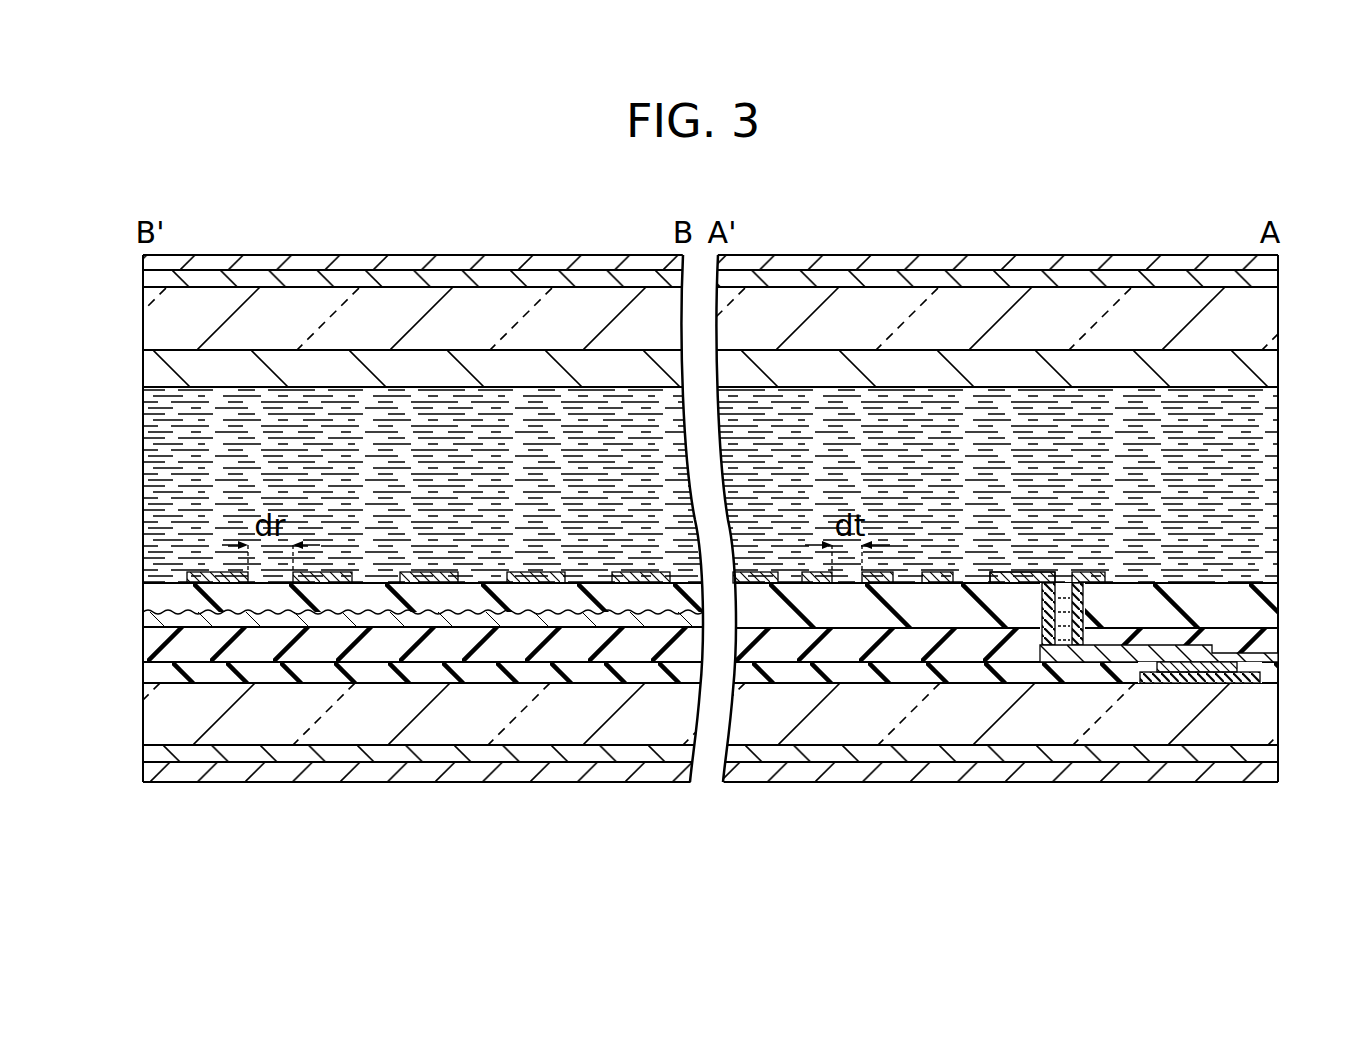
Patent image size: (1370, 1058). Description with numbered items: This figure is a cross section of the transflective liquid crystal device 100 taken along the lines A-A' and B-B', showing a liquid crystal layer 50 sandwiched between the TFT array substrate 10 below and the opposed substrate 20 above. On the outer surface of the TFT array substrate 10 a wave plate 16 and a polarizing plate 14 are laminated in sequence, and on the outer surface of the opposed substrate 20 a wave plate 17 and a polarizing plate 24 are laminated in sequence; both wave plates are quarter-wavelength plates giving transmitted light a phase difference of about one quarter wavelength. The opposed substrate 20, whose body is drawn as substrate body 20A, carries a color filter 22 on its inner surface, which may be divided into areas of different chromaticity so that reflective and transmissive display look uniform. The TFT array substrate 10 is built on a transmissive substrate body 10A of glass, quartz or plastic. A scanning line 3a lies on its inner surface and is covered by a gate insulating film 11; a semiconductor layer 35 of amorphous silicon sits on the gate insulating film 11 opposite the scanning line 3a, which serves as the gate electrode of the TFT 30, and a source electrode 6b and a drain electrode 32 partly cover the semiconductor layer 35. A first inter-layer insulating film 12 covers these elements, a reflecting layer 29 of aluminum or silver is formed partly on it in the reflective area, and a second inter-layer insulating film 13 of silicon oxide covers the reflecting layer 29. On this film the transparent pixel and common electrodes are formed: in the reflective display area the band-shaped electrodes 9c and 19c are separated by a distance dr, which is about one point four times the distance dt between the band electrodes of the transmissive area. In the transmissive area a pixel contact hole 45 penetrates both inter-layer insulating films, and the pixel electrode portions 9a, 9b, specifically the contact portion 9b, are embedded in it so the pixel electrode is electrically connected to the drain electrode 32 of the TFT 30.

The liquid crystal device 100 is at (1224, 172).
The opposed substrate 20 is at (1300, 386).
The polarizing plate 24 is at (143, 262).
The wave plate 17 is at (148, 278).
The substrate body 20A is at (153, 325).
The color filter 22 is at (150, 366).
The liquid crystal layer 50 is at (150, 448).
The TFT array substrate 10 is at (1300, 782).
The second inter-layer insulating film 13 is at (155, 598).
The reflecting layer 29 is at (150, 623).
The first inter-layer insulating film 12 is at (150, 645).
The gate insulating film 11 is at (150, 672).
The substrate body 10A is at (155, 718).
The wave plate 16 is at (150, 752).
The polarizing plate 14 is at (150, 772).
The band-shaped electrode 9c is at (195, 578).
The band-shaped electrode 19c is at (342, 572).
The pixel electrode contact portion 9a is at (1002, 572).
The contact portion 9b is at (1002, 572).
The pixel contact hole 45 is at (1060, 583).
The source electrode 6b is at (1235, 645).
The drain electrode 32 is at (1060, 662).
The semiconductor layer 35 is at (1168, 662).
The scanning line 3a is at (1190, 683).
The TFT 30 is at (1220, 695).